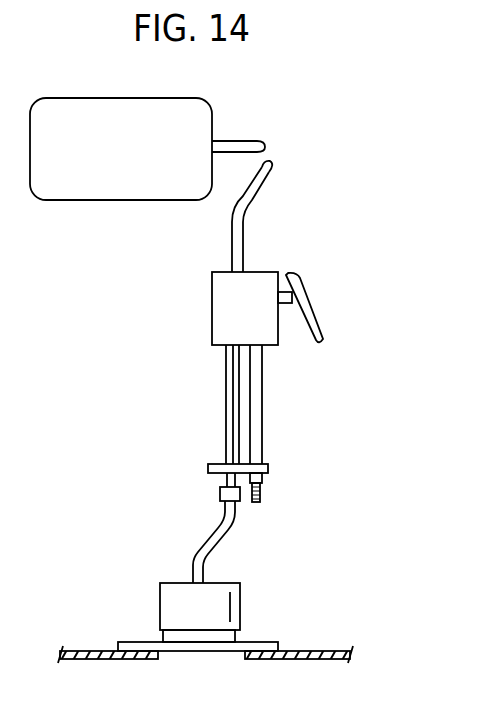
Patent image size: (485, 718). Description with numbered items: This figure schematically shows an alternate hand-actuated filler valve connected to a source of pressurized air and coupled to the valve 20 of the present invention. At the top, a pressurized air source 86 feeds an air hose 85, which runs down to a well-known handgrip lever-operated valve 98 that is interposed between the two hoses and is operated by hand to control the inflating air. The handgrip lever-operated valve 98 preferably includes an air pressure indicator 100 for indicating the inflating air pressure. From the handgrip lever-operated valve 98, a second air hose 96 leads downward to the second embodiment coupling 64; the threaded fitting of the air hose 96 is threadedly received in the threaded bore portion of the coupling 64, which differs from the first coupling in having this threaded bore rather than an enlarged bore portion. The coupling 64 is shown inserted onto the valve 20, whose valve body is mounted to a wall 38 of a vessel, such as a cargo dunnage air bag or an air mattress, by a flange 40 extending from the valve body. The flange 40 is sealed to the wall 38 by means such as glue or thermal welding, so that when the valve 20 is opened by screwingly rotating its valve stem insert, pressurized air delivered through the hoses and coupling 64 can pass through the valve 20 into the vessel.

The pressurized air source 86 is at (128, 193).
The air hose 85 is at (242, 237).
The handgrip lever-operated valve 98 is at (290, 321).
The air pressure indicator 100 is at (262, 478).
The air hose 96 is at (207, 531).
The second embodiment coupling 64 is at (168, 588).
The flange 40 is at (140, 642).
The valve 20 is at (199, 604).
The wall 38 is at (125, 658).